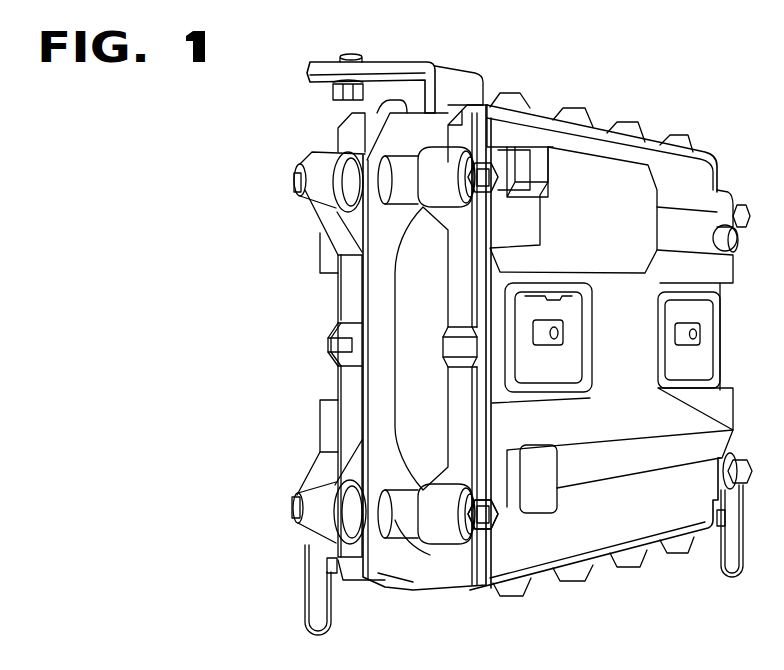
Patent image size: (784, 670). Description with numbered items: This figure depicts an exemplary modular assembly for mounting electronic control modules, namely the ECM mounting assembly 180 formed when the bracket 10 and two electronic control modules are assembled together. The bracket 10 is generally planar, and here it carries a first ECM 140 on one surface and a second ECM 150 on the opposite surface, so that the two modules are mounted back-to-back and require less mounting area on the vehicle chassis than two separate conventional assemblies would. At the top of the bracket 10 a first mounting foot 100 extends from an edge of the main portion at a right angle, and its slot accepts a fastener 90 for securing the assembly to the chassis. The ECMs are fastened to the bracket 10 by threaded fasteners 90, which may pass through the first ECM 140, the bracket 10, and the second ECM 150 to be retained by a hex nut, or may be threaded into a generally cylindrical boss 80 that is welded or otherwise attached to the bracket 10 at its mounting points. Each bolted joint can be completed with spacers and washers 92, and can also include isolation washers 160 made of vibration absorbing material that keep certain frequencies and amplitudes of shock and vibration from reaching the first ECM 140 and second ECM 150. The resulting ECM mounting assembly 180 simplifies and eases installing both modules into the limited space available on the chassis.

The bracket 10 is at (382, 290).
The boss 80 is at (390, 527).
The threaded fastener 90 is at (338, 60).
The washer 92 is at (490, 523).
The first mounting foot 100 is at (412, 60).
The first ECM 140 is at (622, 566).
The second ECM 150 is at (330, 337).
The isolation washer 160 is at (450, 523).
The ECM mounting assembly 180 is at (641, 87).